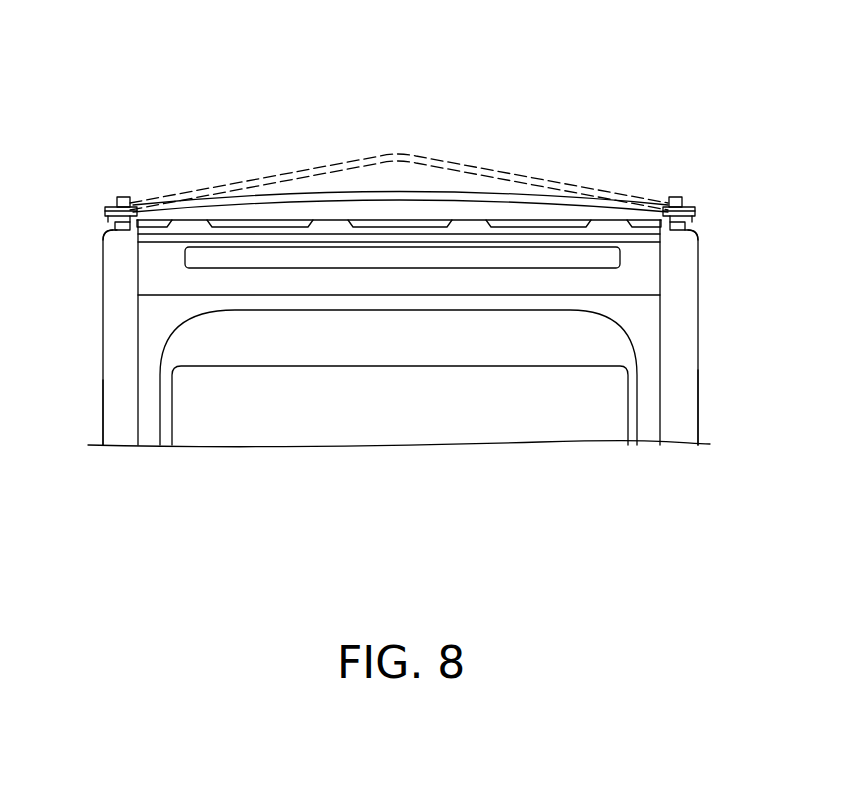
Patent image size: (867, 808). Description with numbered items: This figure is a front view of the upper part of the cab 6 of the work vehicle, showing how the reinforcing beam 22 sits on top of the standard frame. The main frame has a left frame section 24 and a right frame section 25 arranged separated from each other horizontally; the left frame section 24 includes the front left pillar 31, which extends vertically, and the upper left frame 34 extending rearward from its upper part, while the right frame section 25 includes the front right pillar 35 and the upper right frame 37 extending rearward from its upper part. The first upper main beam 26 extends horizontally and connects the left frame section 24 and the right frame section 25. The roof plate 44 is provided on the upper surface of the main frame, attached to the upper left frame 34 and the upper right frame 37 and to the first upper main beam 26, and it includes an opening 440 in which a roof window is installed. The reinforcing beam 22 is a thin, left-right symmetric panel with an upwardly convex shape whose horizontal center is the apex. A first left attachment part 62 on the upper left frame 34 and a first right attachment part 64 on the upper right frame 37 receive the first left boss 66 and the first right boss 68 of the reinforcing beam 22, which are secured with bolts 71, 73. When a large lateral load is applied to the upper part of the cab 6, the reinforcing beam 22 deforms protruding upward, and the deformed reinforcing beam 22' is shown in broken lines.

The cab 6 is at (556, 108).
The reinforcing beam 22 is at (400, 140).
The deformed reinforcing beam 22' is at (399, 126).
The left frame section 24 is at (711, 326).
The right frame section 25 is at (99, 309).
The first upper main beam 26 is at (393, 283).
The front left pillar 31 is at (688, 366).
The upper left frame 34 is at (690, 236).
The front right pillar 35 is at (118, 385).
The upper right frame 37 is at (118, 240).
The roof plate 44 is at (331, 228).
The opening 440 is at (280, 257).
The first left attachment part 62 is at (694, 219).
The first right attachment part 64 is at (108, 219).
The first left boss 66 is at (688, 207).
The first right boss 68 is at (111, 207).
The bolt 71 is at (675, 197).
The bolt 73 is at (122, 197).